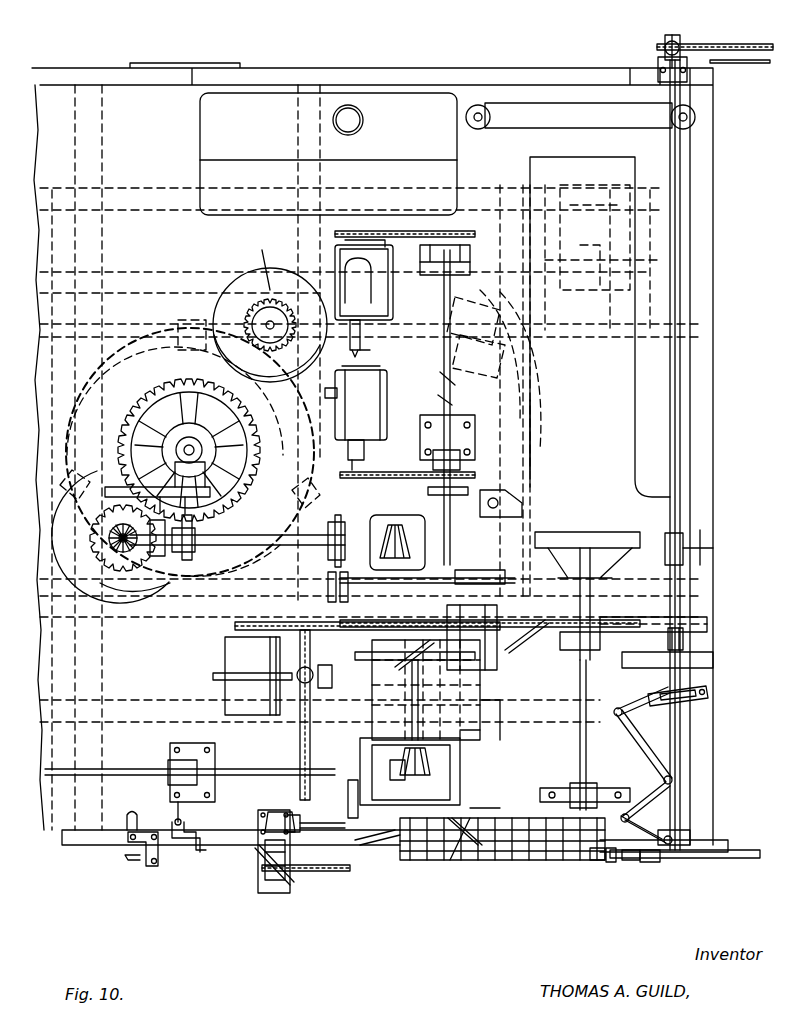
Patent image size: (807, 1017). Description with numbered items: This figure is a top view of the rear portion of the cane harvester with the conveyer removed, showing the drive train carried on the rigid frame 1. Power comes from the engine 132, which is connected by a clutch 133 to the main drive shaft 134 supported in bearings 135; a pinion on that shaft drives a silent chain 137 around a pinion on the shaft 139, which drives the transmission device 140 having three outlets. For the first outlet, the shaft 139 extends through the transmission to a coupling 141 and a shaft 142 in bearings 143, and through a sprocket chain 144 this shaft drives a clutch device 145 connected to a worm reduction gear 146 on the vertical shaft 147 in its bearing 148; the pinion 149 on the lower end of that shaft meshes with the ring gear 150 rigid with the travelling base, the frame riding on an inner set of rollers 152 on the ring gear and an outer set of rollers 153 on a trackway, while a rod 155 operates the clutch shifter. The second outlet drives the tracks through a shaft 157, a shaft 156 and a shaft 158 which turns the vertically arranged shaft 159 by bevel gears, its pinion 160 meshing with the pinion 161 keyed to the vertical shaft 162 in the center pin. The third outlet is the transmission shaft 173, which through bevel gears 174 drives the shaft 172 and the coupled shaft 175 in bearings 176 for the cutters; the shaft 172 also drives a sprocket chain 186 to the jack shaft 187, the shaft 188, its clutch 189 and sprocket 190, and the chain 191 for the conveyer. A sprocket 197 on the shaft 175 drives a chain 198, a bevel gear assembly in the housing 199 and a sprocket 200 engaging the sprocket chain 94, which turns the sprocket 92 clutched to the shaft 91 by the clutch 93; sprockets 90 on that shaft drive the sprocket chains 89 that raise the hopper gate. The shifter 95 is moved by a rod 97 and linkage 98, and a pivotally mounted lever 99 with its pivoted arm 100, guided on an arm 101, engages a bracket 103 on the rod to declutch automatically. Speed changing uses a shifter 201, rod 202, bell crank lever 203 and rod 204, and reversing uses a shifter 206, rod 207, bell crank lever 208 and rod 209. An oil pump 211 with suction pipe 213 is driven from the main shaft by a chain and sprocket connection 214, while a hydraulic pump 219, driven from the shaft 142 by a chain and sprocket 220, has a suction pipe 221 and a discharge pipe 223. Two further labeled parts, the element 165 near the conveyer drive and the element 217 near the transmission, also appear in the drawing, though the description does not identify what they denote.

The rigid frame 1 is at (95, 840).
The sprocket chains 89 is at (735, 48).
The sprockets 90 is at (683, 43).
The transversely extending shaft 91 is at (680, 163).
The sprocket 92 is at (710, 640).
The clutch 93 is at (713, 665).
The sprocket chain 94 is at (645, 625).
The shifter 95 is at (712, 693).
The rod 97 is at (650, 862).
The linkage 98 is at (672, 793).
The pivotally mounted lever 99 is at (612, 862).
The pivoted arm 100 is at (708, 858).
The arm 101 is at (637, 862).
The bracket 103 is at (590, 860).
The engine 132 is at (548, 396).
The clutch 133 is at (610, 556).
The main drive shaft 134 is at (655, 715).
The bearings 135 is at (624, 775).
The silent chain 137 is at (485, 826).
The shaft 139 is at (455, 760).
The transmission device 140 is at (482, 714).
The coupling 141 is at (440, 490).
The shaft 142 is at (405, 232).
The bearings 143 is at (394, 290).
The sprocket chain 144 is at (445, 362).
The clutch device 145 is at (452, 325).
The worm reduction gear 146 is at (236, 290).
The vertical shaft 147 is at (266, 325).
The bearing 148 is at (440, 400).
The pinion 149 is at (262, 268).
The ring gear 150 is at (128, 340).
The inner set of rollers 152 is at (160, 395).
The outer set of rollers 153 is at (532, 425).
The rod 155 is at (430, 348).
The shaft 156 is at (240, 568).
The shaft 157 is at (385, 520).
The shaft 158 is at (170, 580).
The vertically arranged shaft 159 is at (100, 590).
The pinion 160 is at (140, 600).
The pinion 161 is at (210, 400).
The vertical shaft 162 is at (150, 456).
The chain 165 is at (318, 724).
The shaft 172 is at (368, 735).
The transmission shaft 173 is at (468, 735).
The bevel gears 174 is at (460, 778).
The shaft 175 is at (128, 769).
The bearings 176 is at (218, 737).
The sprocket chain 186 is at (296, 836).
The jack shaft 187 is at (315, 812).
The shaft 188 is at (260, 857).
The clutch 189 is at (290, 895).
The sprocket 190 is at (265, 875).
The chain 191 is at (335, 871).
The sprocket 197 is at (305, 762).
The chain 198 is at (300, 742).
The housing 199 is at (226, 660).
The sprocket 200 is at (238, 625).
The shifter 201 is at (400, 790).
The rod 202 is at (455, 797).
The bell crank lever 203 is at (470, 865).
The rod 204 is at (445, 862).
The shifter 206 is at (343, 595).
The rod 207 is at (372, 637).
The bell crank lever 208 is at (370, 848).
The rod 209 is at (345, 880).
The oil pump 211 is at (500, 598).
The suction pipe 213 is at (560, 640).
The chain and sprocket connection 214 is at (575, 665).
The rod 217 is at (412, 675).
The hydraulic pump 219 is at (405, 440).
The chain and sprocket 220 is at (370, 478).
The suction pipe 221 is at (440, 378).
The discharge pipe 223 is at (372, 388).